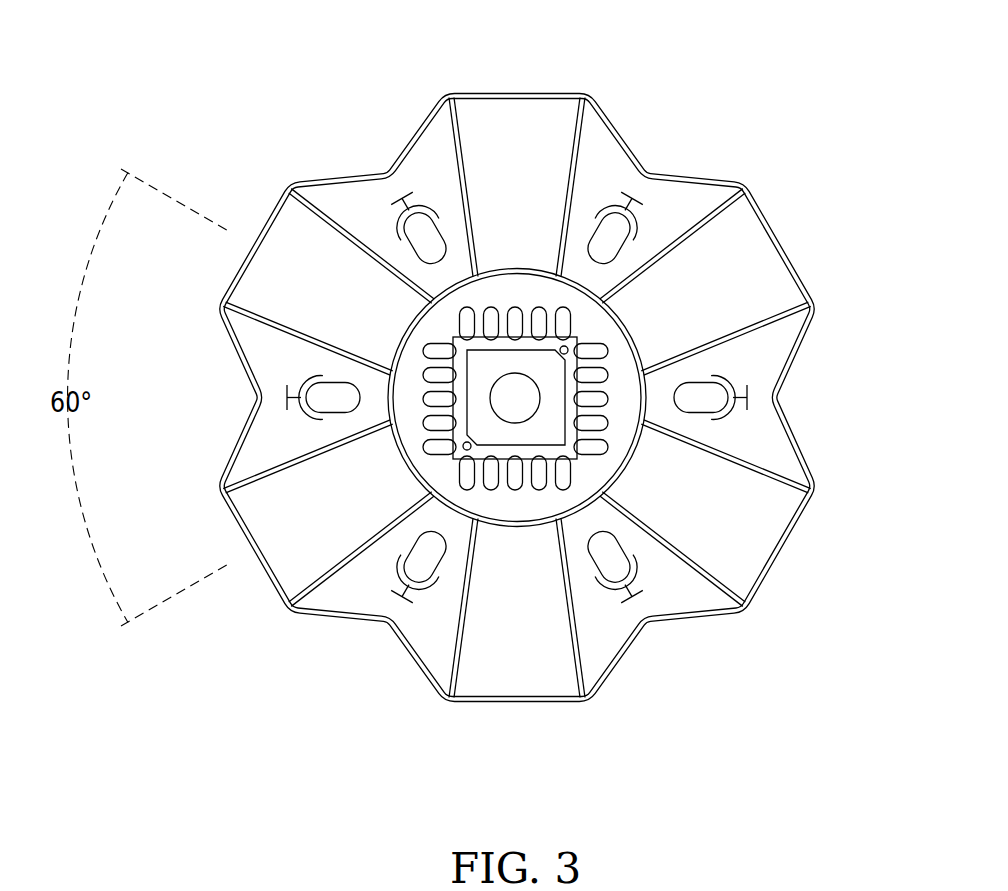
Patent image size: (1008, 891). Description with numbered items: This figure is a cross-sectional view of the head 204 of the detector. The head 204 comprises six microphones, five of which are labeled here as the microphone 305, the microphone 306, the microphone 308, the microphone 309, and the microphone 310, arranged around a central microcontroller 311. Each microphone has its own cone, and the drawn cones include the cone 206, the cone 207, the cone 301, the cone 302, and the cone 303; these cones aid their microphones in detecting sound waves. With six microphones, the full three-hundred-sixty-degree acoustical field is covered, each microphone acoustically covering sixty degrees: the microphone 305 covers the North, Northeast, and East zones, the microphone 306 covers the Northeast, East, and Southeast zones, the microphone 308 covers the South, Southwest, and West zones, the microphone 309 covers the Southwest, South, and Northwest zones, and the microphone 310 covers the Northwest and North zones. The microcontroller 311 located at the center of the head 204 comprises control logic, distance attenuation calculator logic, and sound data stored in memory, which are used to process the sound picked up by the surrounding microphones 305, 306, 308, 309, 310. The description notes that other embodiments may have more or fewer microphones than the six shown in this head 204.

The head 204 is at (453, 122).
The cone 206 is at (723, 207).
The cone 207 is at (778, 477).
The cone 301 is at (578, 673).
The cone 302 is at (307, 598).
The cone 303 is at (243, 315).
The microphone 305 is at (632, 232).
The microphone 306 is at (730, 381).
The microphone 308 is at (433, 585).
The microphone 309 is at (317, 420).
The microphone 310 is at (398, 232).
The microcontroller 311 is at (515, 306).